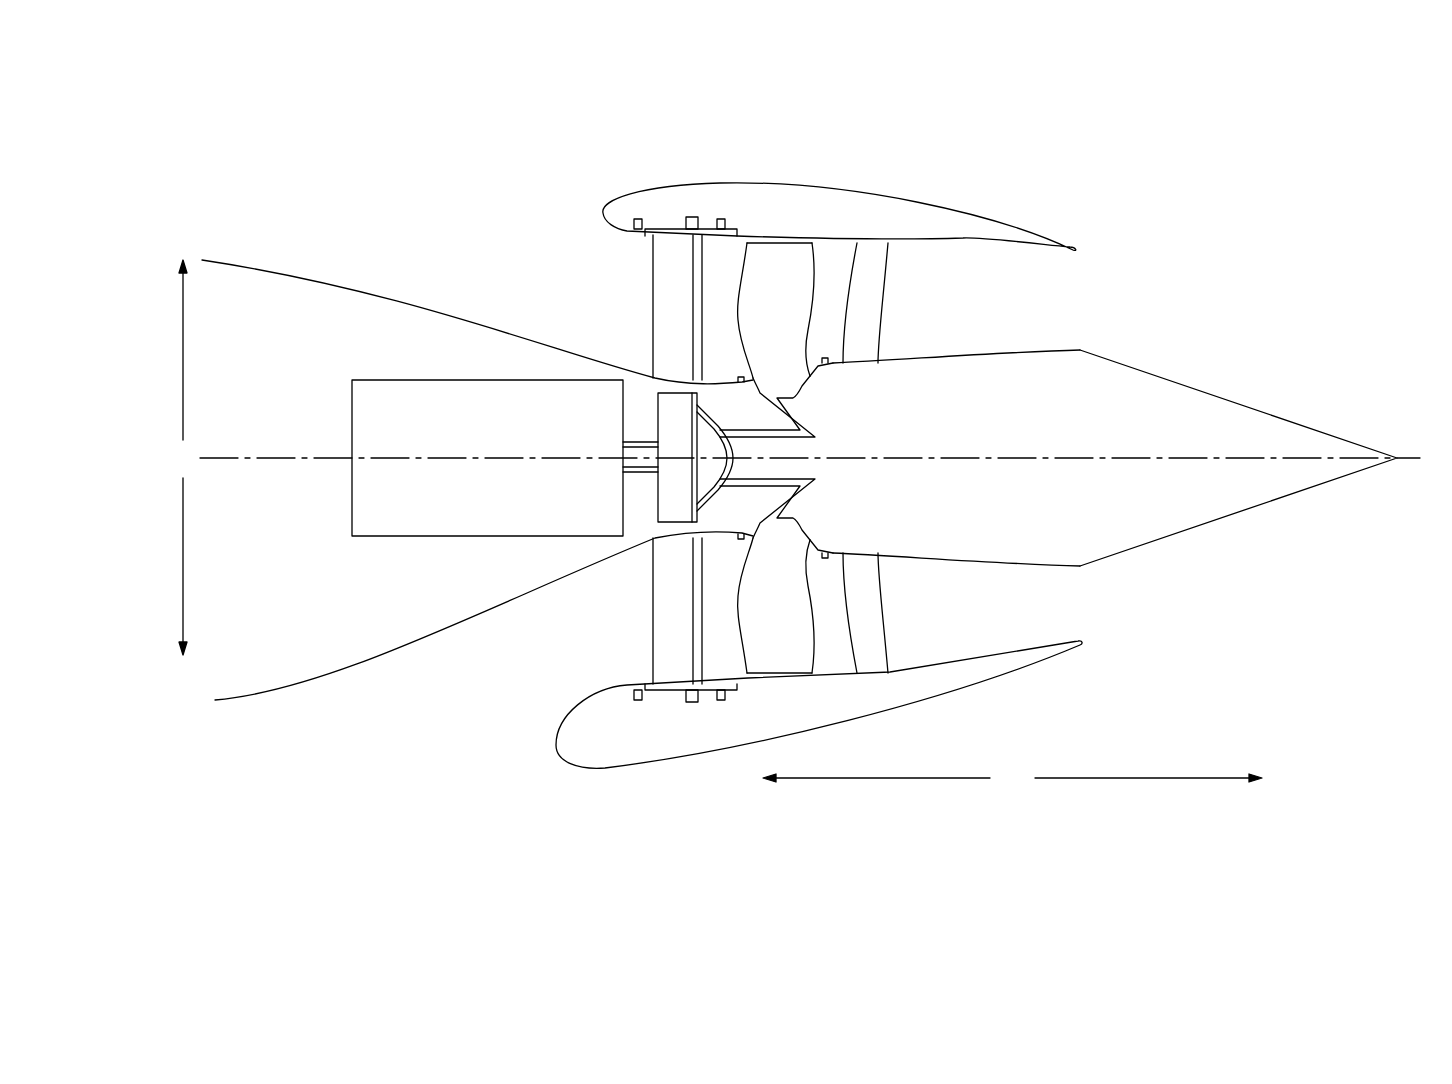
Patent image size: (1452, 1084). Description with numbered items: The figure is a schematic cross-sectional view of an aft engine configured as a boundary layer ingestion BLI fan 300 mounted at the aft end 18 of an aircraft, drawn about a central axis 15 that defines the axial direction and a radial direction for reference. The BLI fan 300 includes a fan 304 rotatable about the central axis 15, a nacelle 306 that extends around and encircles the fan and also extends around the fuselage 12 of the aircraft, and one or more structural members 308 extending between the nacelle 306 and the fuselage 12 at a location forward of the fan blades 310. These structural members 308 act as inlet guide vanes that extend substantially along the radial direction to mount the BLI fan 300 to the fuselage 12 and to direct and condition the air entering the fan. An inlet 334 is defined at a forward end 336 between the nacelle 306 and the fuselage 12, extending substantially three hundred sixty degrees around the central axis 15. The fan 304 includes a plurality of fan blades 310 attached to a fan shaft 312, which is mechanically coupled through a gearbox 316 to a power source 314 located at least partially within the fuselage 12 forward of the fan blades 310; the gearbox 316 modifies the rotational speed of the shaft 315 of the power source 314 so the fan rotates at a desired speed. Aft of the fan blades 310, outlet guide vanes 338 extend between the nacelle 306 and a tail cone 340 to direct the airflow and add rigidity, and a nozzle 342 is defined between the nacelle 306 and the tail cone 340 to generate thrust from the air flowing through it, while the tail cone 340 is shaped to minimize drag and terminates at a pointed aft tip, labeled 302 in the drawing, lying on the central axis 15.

The fuselage 12 is at (286, 268).
The central axis 15 is at (1195, 456).
The aft end 18 is at (492, 148).
The BLI fan 300 is at (1142, 200).
The tail cone tip 302 is at (1324, 456).
The fan 304 is at (782, 262).
The nacelle 306 is at (790, 186).
The structural member 308 is at (654, 260).
The fan blade 310 is at (810, 285).
The fan shaft 312 is at (812, 436).
The power source 314 is at (523, 380).
The shaft 315 is at (644, 474).
The gearbox 316 is at (655, 400).
The inlet 334 is at (614, 627).
The forward end 336 is at (543, 766).
The outlet guide vane 338 is at (878, 623).
The tail cone 340 is at (1153, 366).
The nozzle 342 is at (1052, 300).